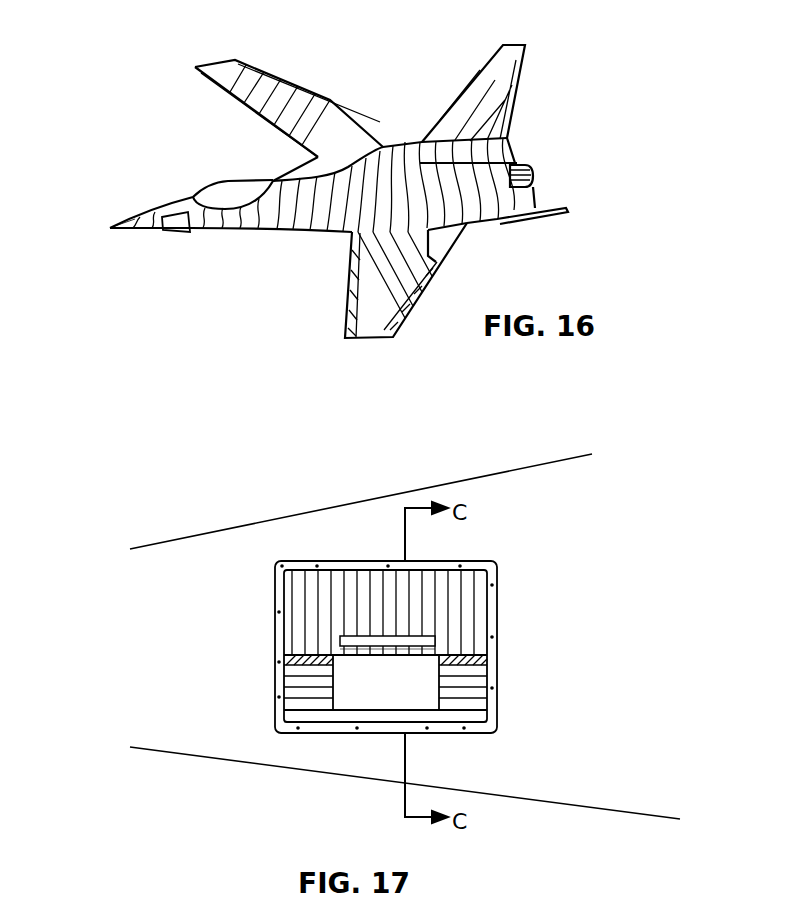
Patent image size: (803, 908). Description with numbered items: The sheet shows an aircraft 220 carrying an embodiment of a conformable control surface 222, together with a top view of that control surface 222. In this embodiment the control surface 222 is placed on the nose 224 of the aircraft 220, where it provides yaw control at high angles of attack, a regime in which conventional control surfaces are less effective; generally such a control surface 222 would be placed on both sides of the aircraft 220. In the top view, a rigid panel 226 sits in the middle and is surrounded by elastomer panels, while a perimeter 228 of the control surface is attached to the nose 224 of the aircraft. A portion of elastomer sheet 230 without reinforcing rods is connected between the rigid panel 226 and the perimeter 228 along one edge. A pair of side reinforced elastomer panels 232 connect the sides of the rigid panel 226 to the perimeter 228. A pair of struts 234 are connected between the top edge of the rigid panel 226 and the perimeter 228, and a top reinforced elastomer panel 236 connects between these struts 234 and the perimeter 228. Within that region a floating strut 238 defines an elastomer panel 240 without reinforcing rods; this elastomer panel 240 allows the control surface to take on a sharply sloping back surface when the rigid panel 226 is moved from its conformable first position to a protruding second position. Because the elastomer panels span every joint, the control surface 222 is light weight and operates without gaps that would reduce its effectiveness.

In FIG. 16, the aircraft 220 is at (400, 36).
In FIG. 16, the control surface 222 is at (165, 233).
In FIG. 17, the control surface 222 is at (361, 527).
In FIG. 16, the nose 224 is at (142, 213).
In FIG. 17, the nose 224 is at (175, 601).
In FIG. 17, the rigid panel 226 is at (403, 694).
In FIG. 17, the perimeter 228 is at (483, 670).
In FIG. 17, the elastomer sheet 230 is at (448, 720).
In FIG. 17, the side reinforced elastomer panels 232 is at (295, 692).
In FIG. 17, the struts 234 is at (292, 660).
In FIG. 17, the top reinforced elastomer panel 236 is at (442, 590).
In FIG. 17, the floating strut 238 is at (347, 640).
In FIG. 17, the elastomer panel 240 is at (378, 650).